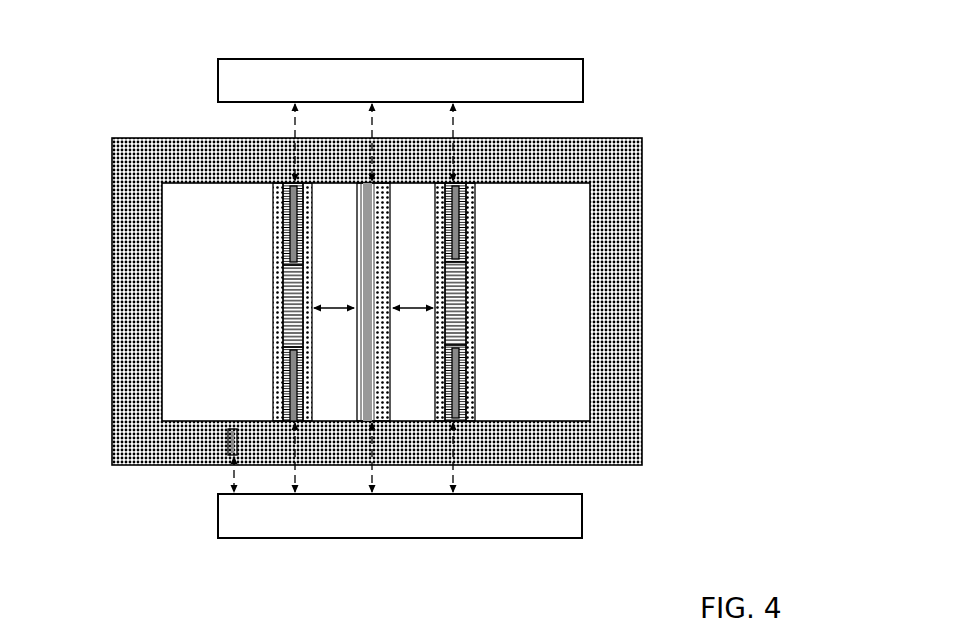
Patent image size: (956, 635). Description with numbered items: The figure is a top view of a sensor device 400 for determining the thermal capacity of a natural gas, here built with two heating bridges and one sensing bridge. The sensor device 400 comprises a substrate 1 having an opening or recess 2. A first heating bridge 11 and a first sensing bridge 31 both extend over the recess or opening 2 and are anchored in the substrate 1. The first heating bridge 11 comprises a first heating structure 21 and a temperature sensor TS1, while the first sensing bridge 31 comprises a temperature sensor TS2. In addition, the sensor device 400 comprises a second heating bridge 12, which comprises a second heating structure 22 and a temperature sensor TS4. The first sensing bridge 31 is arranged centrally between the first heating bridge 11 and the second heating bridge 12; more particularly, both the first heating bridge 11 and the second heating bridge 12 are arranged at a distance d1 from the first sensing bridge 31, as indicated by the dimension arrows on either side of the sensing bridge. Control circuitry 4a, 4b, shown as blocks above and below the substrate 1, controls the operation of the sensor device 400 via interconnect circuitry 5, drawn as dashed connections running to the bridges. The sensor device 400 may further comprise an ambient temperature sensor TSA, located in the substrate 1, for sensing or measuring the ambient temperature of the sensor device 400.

The sensor device 400 is at (834, 531).
The substrate 1 is at (125, 217).
The opening or recess 2 is at (567, 217).
The first heating bridge 11 is at (273, 262).
The second heating bridge 12 is at (476, 249).
The first heating structure 21 is at (290, 310).
The second heating structure 22 is at (462, 290).
The first sensing bridge 31 is at (390, 395).
The temperature sensor TS1 is at (290, 233).
The temperature sensor TS2 is at (368, 219).
The temperature sensor TS4 is at (460, 218).
The ambient temperature sensor TSA is at (228, 452).
The control circuitry 4a is at (583, 80).
The control circuitry 4b is at (582, 515).
The interconnect circuitry 5 is at (453, 116).
The distance d1 is at (373, 294).